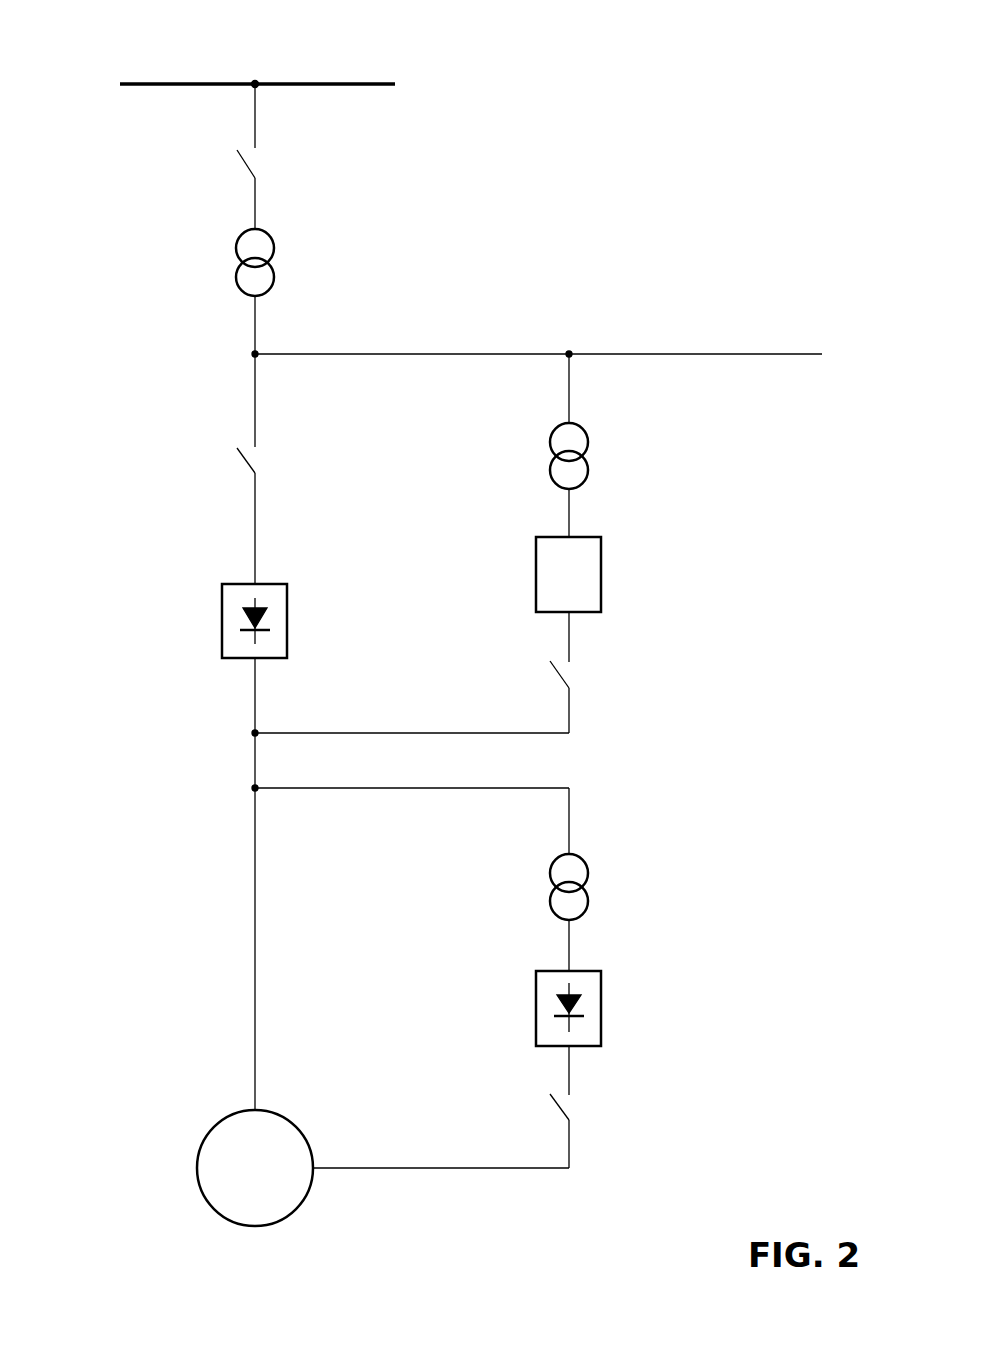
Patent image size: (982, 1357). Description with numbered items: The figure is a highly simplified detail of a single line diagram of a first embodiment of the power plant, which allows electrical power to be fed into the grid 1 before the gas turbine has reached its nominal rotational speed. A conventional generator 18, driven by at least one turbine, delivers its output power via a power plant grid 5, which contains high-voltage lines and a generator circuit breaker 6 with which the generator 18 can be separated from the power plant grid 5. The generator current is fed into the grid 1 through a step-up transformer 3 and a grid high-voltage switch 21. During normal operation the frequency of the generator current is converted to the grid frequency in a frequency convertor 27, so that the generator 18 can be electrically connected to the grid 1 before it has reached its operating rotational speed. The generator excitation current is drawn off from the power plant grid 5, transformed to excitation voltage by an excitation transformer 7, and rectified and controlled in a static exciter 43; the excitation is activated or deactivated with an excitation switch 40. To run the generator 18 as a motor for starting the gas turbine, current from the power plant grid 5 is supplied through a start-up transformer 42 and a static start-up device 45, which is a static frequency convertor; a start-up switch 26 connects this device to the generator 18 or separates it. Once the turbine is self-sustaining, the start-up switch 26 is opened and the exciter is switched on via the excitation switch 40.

The grid 1 is at (186, 80).
The grid high-voltage switch 21 is at (242, 165).
The step-up transformer 3 is at (246, 282).
The power plant grid 5 is at (728, 353).
The generator circuit breaker 6 is at (240, 462).
The frequency convertor 27 is at (233, 620).
The start-up transformer 42 is at (590, 455).
The static start-up device 45 is at (578, 575).
The start-up switch 26 is at (568, 672).
The excitation transformer 7 is at (590, 888).
The static exciter 43 is at (590, 1005).
The excitation switch 40 is at (568, 1107).
The generator 18 is at (215, 1158).